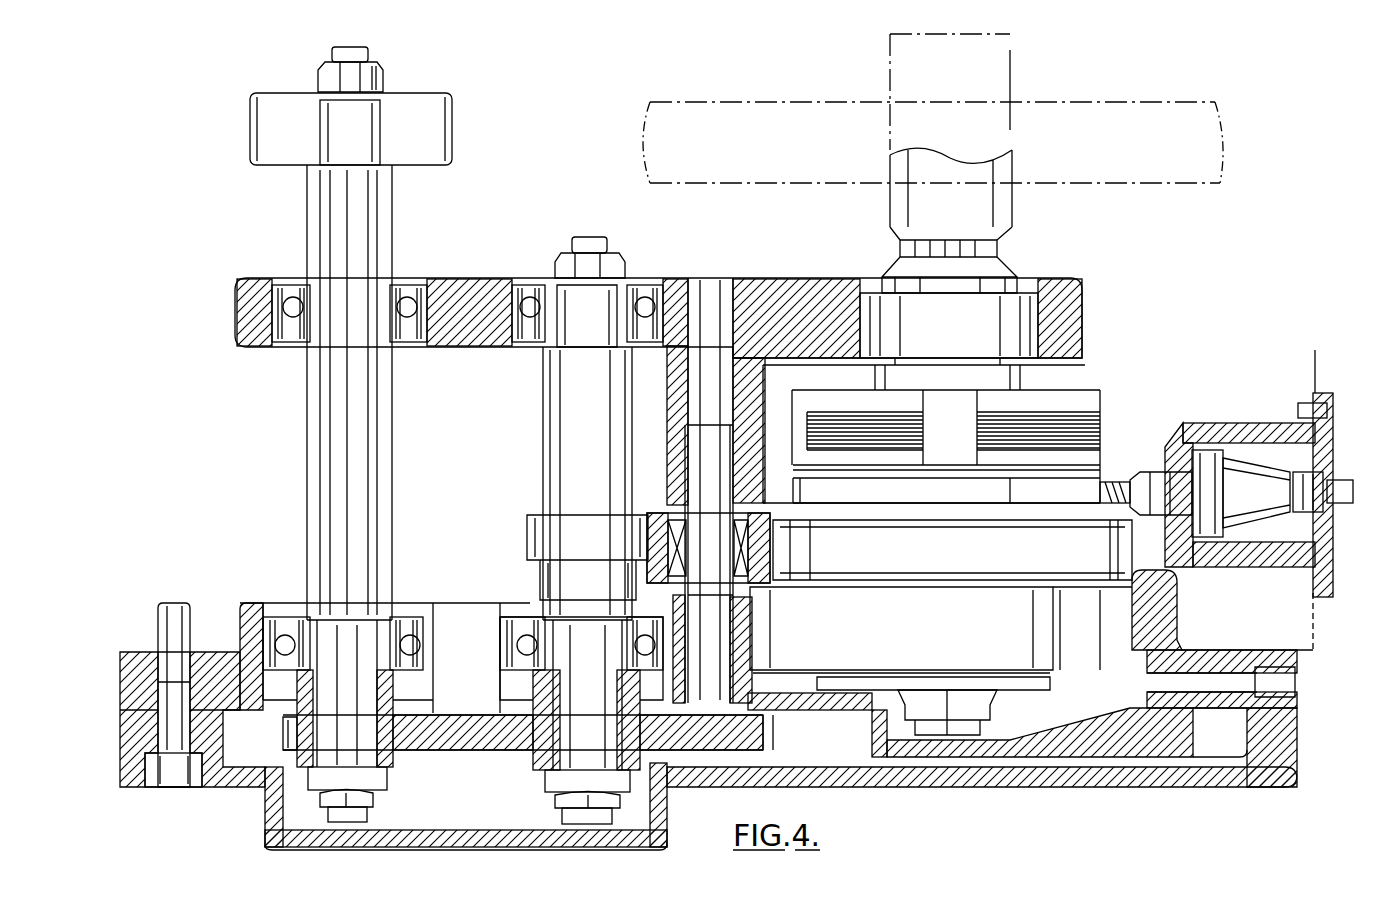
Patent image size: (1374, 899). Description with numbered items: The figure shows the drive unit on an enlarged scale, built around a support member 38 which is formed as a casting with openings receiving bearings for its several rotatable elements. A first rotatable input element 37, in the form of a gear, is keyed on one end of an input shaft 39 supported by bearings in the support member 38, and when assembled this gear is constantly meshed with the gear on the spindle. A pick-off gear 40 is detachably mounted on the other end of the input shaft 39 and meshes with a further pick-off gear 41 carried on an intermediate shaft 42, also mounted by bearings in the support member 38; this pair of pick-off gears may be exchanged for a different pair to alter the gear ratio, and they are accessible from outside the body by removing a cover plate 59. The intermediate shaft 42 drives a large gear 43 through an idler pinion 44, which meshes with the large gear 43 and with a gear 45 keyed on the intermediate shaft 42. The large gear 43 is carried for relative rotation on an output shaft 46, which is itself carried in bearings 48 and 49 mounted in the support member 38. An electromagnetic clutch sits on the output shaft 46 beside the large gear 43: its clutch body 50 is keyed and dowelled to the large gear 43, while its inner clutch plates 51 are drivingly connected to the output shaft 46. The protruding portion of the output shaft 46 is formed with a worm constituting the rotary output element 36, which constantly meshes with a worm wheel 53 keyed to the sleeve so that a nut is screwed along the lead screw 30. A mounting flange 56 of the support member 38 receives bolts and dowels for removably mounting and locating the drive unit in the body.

The lead screw 30 is at (770, 118).
The rotary output element 36 is at (985, 204).
The first rotatable input element 37 is at (444, 142).
The support member 38 is at (795, 278).
The input shaft 39 is at (378, 483).
The pick-off gear 40 is at (400, 748).
The further pick-off gear 41 is at (486, 740).
The intermediate shaft 42 is at (550, 436).
The large gear 43 is at (1105, 540).
The idler pinion 44 is at (668, 513).
The gear 45 is at (540, 540).
The output shaft 46 is at (998, 248).
The bearing 48 is at (1135, 625).
The bearing 49 is at (1025, 332).
The clutch body 50 is at (1095, 484).
The inner clutch plates 51 is at (1098, 412).
The worm wheel 53 is at (1013, 74).
The mounting flange 56 is at (212, 660).
The cover plate 59 is at (988, 780).